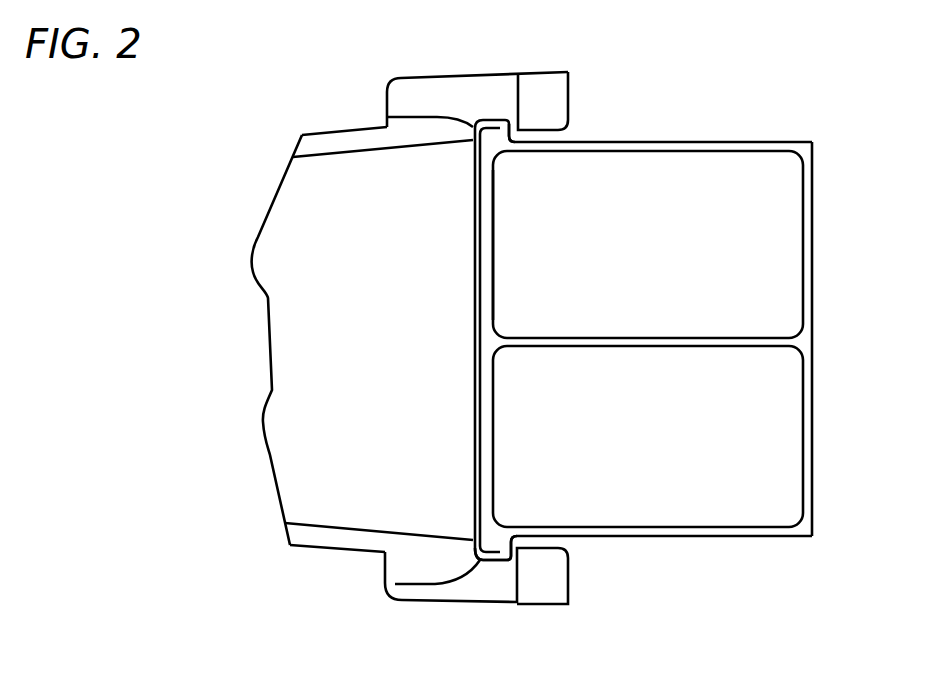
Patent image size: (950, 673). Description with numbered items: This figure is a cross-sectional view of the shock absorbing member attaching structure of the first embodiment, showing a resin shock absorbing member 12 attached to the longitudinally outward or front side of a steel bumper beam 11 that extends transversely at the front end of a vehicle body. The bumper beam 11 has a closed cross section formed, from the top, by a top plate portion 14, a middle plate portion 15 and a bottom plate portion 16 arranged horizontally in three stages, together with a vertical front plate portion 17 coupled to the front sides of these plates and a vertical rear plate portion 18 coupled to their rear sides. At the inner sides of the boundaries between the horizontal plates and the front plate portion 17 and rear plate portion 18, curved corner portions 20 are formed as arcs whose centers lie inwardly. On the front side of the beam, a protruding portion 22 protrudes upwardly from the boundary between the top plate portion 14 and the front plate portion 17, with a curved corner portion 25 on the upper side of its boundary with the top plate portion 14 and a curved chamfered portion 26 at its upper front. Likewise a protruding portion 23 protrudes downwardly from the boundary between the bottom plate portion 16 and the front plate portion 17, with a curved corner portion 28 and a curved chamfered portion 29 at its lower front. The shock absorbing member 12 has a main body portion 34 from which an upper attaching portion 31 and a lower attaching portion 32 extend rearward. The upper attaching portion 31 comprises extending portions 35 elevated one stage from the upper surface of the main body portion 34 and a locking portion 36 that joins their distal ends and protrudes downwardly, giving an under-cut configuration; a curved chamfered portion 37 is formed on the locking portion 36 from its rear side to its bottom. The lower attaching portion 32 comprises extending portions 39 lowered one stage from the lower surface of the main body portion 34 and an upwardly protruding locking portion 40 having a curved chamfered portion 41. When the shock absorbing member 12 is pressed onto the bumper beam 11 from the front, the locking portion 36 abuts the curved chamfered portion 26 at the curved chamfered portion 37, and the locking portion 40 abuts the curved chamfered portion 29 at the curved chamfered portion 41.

The bumper beam 11 is at (694, 325).
The shock absorbing member 12 is at (421, 339).
The top plate portion 14 is at (700, 141).
The middle plate portion 15 is at (640, 338).
The bottom plate portion 16 is at (675, 527).
The front plate portion 17 is at (493, 247).
The rear plate portion 18 is at (812, 243).
The curved corner portion 20 is at (648, 339).
The protruding portion 22 is at (473, 121).
The protruding portion 23 is at (388, 584).
The curved corner portion 25 is at (522, 119).
The curved chamfered portion 26 is at (387, 115).
The curved corner portion 28 is at (550, 548).
The curved chamfered portion 29 is at (475, 550).
The upper attaching portion 31 is at (600, 124).
The lower attaching portion 32 is at (600, 600).
The main body portion 34 is at (323, 134).
The extending portions 35 is at (490, 75).
The locking portion 36 is at (545, 132).
The curved chamfered portion 37 is at (545, 131).
The extending portions 39 is at (457, 602).
The locking portion 40 is at (550, 546).
The curved chamfered portion 41 is at (570, 550).